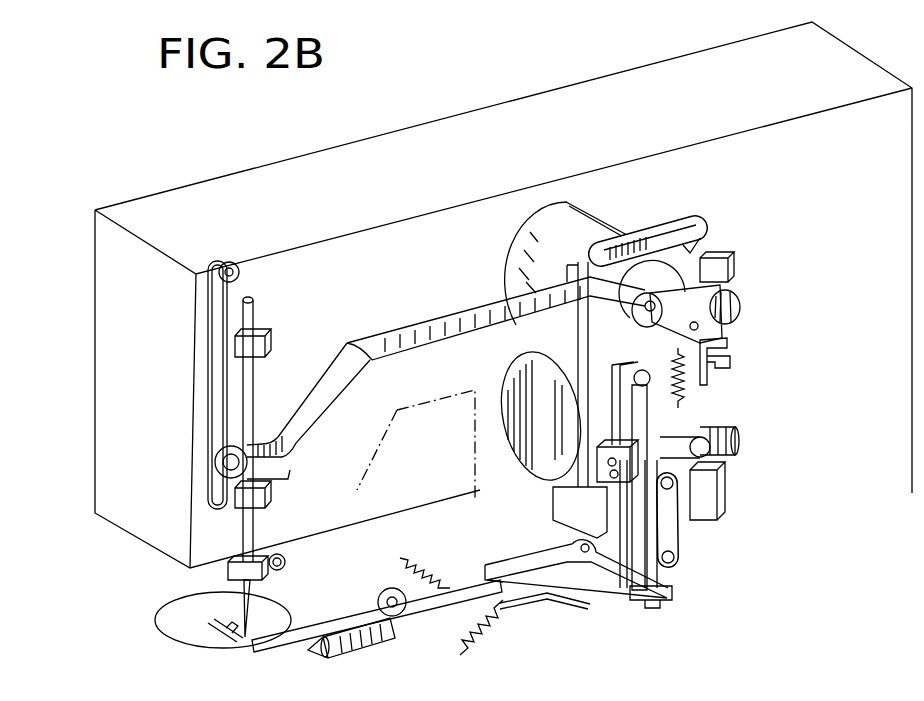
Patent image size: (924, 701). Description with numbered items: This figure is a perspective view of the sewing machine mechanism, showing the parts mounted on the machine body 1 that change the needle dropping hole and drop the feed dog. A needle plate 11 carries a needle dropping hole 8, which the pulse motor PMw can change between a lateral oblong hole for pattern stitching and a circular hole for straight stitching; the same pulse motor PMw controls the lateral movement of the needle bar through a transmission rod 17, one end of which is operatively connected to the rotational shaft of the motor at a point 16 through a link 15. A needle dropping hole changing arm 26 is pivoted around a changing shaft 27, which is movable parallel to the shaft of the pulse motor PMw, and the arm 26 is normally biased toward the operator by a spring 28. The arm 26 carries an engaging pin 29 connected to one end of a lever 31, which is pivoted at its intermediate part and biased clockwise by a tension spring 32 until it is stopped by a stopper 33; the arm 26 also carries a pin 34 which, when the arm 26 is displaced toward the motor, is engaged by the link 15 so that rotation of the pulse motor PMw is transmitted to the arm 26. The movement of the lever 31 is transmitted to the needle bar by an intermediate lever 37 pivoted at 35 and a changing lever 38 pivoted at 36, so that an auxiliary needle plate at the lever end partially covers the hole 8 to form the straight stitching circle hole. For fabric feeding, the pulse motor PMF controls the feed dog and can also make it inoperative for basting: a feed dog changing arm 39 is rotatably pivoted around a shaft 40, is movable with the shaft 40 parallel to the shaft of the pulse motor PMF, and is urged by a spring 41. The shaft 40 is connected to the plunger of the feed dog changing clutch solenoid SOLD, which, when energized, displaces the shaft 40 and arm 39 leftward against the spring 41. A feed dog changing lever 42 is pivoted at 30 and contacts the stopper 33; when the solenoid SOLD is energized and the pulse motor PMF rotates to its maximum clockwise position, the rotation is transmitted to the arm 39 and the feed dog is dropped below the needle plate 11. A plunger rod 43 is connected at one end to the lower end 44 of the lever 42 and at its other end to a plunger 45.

The machine body 1 is at (212, 193).
The needle dropping hole 8 is at (240, 637).
The needle plate 11 is at (170, 617).
The link 15 is at (712, 318).
The point of the rotational shaft 16 is at (657, 292).
The transmission rod 17 is at (344, 336).
The needle dropping hole changing arm 26 is at (712, 328).
The changing shaft 27 is at (738, 298).
The spring 28 is at (716, 262).
The engaging pin 29 is at (724, 346).
The pivot 30 is at (640, 372).
The lever 31 is at (648, 430).
The tension spring 32 is at (685, 385).
The stopper 33 is at (605, 438).
The pin 34 is at (703, 223).
The pivot 35 is at (577, 538).
The pivot 36 is at (380, 600).
The intermediate lever 37 is at (510, 562).
The changing lever 38 is at (415, 592).
The feed dog changing arm 39 is at (732, 452).
The shaft 40 is at (702, 478).
The spring 41 is at (738, 437).
The feed dog changing lever 42 is at (728, 362).
The plunger rod 43 is at (553, 600).
The lower end of the lever 44 is at (633, 560).
The plunger 45 is at (377, 643).
The pulse motor PMw is at (515, 247).
The pulse motor PMF is at (515, 368).
The feed dog changing clutch solenoid SOLD is at (700, 505).